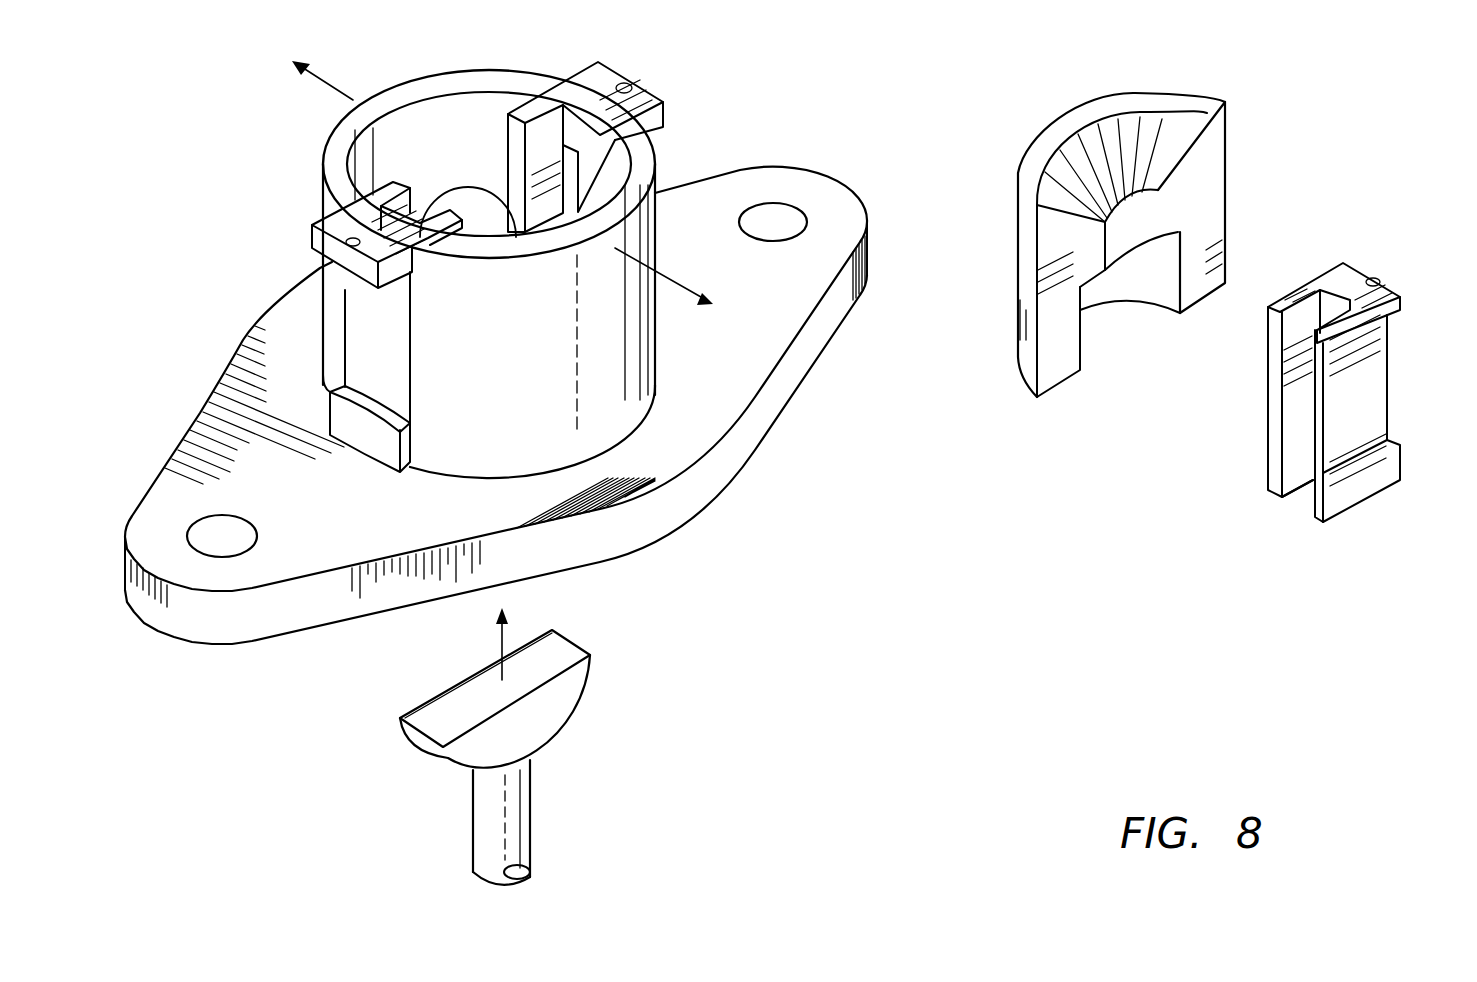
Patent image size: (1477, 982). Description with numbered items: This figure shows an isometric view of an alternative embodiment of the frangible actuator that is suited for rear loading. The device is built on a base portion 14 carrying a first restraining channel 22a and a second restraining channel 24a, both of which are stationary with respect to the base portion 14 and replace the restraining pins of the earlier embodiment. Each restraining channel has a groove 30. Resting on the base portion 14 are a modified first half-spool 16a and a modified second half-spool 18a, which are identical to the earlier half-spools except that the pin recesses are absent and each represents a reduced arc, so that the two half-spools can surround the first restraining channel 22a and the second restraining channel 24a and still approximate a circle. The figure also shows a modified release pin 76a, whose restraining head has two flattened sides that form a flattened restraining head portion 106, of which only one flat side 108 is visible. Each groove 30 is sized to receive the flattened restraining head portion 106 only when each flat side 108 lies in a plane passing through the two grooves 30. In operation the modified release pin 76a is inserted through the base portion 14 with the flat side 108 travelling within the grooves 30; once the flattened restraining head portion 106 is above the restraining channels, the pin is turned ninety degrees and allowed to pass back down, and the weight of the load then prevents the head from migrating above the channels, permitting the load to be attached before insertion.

The base portion 14 is at (819, 361).
The modified first half-spool 16a is at (798, 297).
The modified second half-spool 18a is at (463, 70).
The first restraining channel 22a is at (625, 68).
The second restraining channel 24a is at (320, 247).
The groove 30 is at (1304, 433).
The modified release pin 76a is at (535, 834).
The flattened restraining head portion 106 is at (456, 710).
The flat side 108 is at (540, 745).